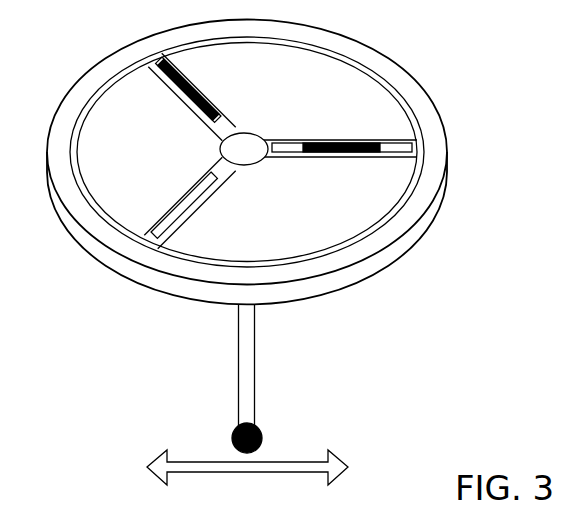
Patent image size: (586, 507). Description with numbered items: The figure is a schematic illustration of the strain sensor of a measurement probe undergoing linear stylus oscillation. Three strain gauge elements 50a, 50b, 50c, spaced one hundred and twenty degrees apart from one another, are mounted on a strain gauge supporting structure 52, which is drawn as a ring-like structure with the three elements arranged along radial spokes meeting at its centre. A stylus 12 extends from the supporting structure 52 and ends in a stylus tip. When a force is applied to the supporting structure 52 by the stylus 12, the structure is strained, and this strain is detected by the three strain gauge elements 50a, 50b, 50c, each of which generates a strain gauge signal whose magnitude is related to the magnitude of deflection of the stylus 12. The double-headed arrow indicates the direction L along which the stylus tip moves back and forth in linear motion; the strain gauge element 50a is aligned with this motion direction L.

The strain gauge supporting structure 52 is at (260, 182).
The strain gauge element 50a is at (379, 143).
The strain gauge element 50b is at (160, 234).
The strain gauge element 50c is at (148, 68).
The stylus 12 is at (256, 392).
The motion direction L is at (213, 461).